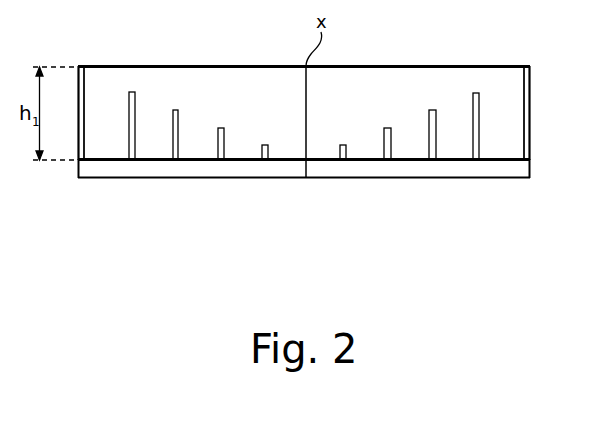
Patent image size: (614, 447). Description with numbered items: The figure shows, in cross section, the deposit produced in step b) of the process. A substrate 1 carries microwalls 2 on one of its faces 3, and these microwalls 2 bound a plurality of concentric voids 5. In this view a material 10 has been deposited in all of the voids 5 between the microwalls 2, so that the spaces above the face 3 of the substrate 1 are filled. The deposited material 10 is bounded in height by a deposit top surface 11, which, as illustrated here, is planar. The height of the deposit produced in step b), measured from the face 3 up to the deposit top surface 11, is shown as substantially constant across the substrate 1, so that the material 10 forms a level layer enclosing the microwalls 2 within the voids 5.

The substrate 1 is at (488, 168).
The microwalls 2 is at (132, 92).
The face 3 is at (353, 157).
The concentric voids 5 is at (147, 153).
The material 10 is at (367, 82).
The deposit top surface 11 is at (112, 65).